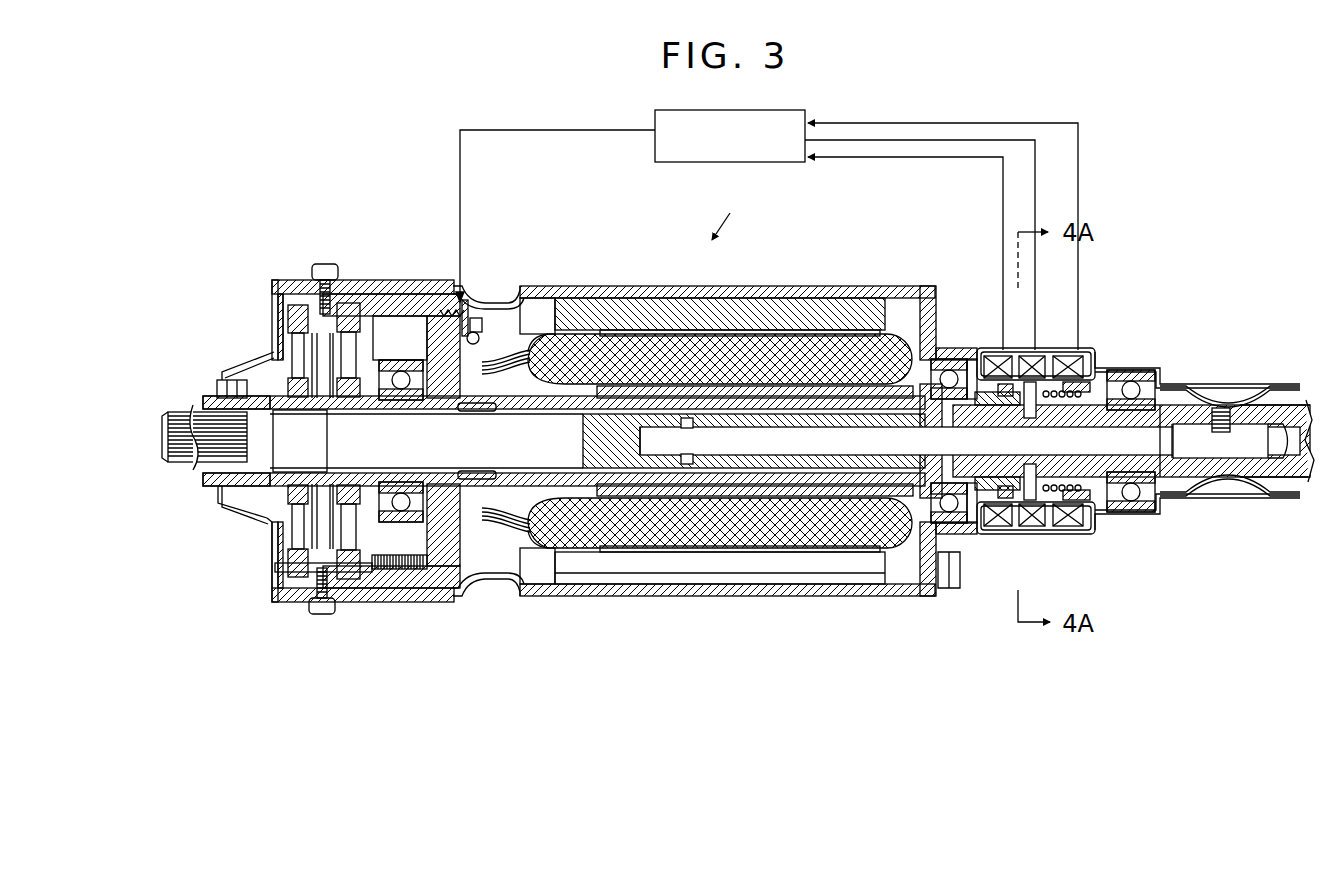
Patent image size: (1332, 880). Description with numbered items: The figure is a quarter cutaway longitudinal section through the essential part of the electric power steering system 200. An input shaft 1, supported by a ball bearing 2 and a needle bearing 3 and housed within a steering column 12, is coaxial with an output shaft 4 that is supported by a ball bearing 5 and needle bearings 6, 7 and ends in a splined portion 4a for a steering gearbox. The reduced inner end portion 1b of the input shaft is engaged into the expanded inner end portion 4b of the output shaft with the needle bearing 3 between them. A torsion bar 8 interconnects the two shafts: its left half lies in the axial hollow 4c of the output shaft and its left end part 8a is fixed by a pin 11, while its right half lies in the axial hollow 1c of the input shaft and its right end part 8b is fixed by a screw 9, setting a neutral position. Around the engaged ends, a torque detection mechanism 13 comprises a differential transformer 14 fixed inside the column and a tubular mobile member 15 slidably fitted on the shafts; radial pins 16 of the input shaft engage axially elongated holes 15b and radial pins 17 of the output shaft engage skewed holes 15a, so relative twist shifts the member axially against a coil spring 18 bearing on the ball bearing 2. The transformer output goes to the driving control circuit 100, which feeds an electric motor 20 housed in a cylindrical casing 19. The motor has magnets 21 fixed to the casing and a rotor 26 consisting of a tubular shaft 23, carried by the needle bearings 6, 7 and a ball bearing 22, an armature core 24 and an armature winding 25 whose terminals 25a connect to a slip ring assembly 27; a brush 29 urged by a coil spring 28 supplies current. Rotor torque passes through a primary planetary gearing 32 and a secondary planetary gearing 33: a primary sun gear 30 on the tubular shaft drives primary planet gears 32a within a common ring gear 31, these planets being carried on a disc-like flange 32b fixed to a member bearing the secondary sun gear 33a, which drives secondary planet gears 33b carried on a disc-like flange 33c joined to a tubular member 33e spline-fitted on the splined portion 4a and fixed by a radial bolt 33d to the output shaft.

The input shaft 1 is at (1316, 440).
The reduced axially inner end portion 1b is at (1000, 480).
The axial hollow of the input shaft 1c is at (1167, 475).
The ball bearing 2 is at (1157, 393).
The needle bearing 3 is at (958, 368).
The output shaft 4 is at (565, 468).
The splined portion 4a is at (205, 425).
The expanded axially inner end portion 4b is at (980, 487).
The axial hollow of the output shaft 4c is at (775, 458).
The ball bearing 5 is at (947, 358).
The needle bearing 6 is at (867, 482).
The needle bearing 7 is at (473, 462).
The torsion bar 8 is at (1080, 445).
The left end part of the torsion bar 8a is at (628, 470).
The right end part of the torsion bar 8b is at (1220, 452).
The screw 9 is at (1221, 425).
The pin 11 is at (662, 465).
The steering column 12 is at (1127, 370).
The torque detection mechanism 13 is at (1075, 350).
The differential transformer 14 is at (1023, 366).
The tubular mobile member 15 is at (1000, 362).
The engagement holes 15a is at (1045, 502).
The engagement holes 15b is at (1034, 386).
The radial pins 16 is at (1031, 348).
The radial pins 17 is at (1030, 500).
The coil spring 18 is at (1088, 380).
The cylindrical casing 19 is at (633, 292).
The electric motor 20 is at (897, 322).
The magnets 21 is at (817, 312).
The ball bearing 22 is at (390, 355).
The tubular shaft 23 is at (533, 310).
The armature core 24 is at (735, 338).
The armature winding 25 is at (770, 345).
The terminals 25a is at (498, 362).
The rotor 26 is at (548, 328).
The slip ring assembly 27 is at (488, 298).
The coil spring 28 is at (437, 305).
The brush 29 is at (460, 305).
The primary sun gear 30 is at (342, 555).
The common ring gear 31 is at (372, 300).
The primary planetary gearing 32 is at (332, 325).
The primary planet gears 32a is at (352, 300).
The disc-like flange 32b is at (345, 595).
The secondary planetary gearing 33 is at (276, 332).
The secondary sun gear 33a is at (300, 470).
The secondary planet gears 33b is at (279, 322).
The disc-like flange 33c is at (280, 543).
The radial bolt 33d is at (232, 380).
The tubular member 33e is at (237, 480).
The driving control circuit 100 is at (808, 163).
The steering system 200 is at (739, 211).